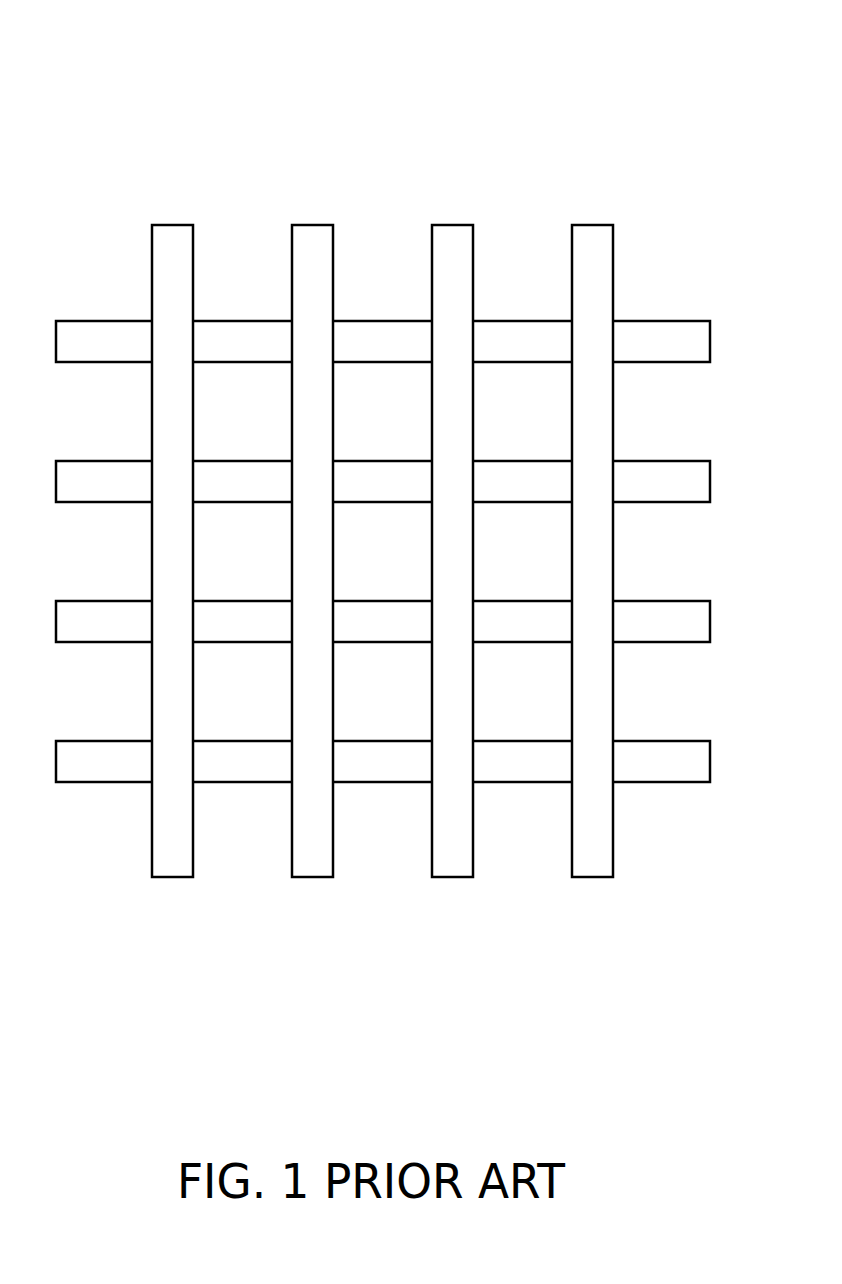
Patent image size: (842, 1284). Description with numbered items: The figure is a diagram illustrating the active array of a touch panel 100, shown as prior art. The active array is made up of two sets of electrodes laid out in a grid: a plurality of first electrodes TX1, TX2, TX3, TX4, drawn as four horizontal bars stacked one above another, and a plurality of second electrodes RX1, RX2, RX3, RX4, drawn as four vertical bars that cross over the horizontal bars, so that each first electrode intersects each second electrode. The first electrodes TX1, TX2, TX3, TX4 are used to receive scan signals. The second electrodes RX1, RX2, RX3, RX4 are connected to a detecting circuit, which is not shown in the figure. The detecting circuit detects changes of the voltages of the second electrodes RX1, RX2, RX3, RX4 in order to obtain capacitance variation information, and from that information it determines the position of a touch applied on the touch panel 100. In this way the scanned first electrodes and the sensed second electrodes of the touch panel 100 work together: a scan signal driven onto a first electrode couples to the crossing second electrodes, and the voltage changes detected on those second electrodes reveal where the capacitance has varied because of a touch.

The touch panel 100 is at (633, 112).
The first electrode TX1 is at (690, 341).
The first electrode TX2 is at (690, 481).
The first electrode TX3 is at (690, 621).
The first electrode TX4 is at (690, 761).
The second electrode RX1 is at (173, 862).
The second electrode RX2 is at (313, 862).
The second electrode RX3 is at (453, 862).
The second electrode RX4 is at (593, 862).